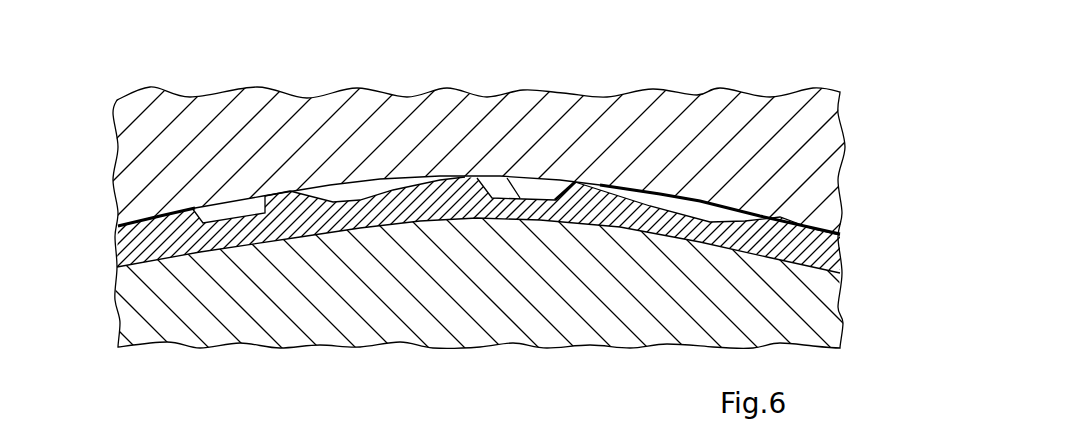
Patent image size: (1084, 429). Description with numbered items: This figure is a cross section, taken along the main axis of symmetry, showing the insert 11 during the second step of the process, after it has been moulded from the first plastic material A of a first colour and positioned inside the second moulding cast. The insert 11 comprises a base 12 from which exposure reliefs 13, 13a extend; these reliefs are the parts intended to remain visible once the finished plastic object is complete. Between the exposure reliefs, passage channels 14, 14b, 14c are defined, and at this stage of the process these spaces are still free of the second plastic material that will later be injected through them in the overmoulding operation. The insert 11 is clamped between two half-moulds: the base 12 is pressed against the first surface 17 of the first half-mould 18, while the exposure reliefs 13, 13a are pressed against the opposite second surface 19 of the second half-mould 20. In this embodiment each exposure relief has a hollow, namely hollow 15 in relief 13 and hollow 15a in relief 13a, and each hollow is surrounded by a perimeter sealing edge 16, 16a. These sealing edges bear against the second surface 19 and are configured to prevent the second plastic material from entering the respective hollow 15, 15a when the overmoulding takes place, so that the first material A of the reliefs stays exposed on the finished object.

The insert 11 is at (852, 255).
The base 12 is at (533, 210).
The exposure relief 13 is at (478, 175).
The exposure relief 13a is at (762, 203).
The passage channel 14 is at (528, 187).
The passage channel 14b is at (235, 207).
The passage channel 14c is at (830, 242).
The hollow 15 is at (360, 192).
The hollow 15a is at (707, 208).
The perimeter sealing edge 16 is at (280, 190).
The perimeter sealing edge 16a is at (590, 187).
The first surface 17 is at (408, 218).
The first half-mould 18 is at (360, 307).
The second surface 19 is at (143, 217).
The second half-mould 20 is at (208, 140).
The first plastic material A is at (770, 238).